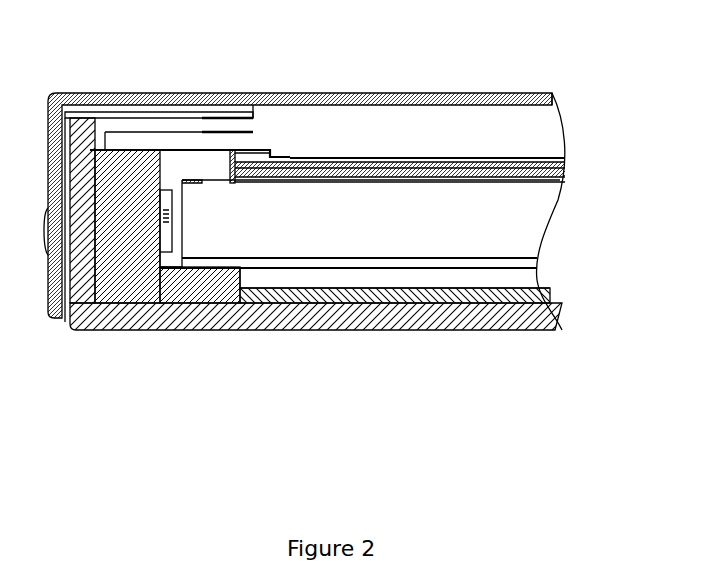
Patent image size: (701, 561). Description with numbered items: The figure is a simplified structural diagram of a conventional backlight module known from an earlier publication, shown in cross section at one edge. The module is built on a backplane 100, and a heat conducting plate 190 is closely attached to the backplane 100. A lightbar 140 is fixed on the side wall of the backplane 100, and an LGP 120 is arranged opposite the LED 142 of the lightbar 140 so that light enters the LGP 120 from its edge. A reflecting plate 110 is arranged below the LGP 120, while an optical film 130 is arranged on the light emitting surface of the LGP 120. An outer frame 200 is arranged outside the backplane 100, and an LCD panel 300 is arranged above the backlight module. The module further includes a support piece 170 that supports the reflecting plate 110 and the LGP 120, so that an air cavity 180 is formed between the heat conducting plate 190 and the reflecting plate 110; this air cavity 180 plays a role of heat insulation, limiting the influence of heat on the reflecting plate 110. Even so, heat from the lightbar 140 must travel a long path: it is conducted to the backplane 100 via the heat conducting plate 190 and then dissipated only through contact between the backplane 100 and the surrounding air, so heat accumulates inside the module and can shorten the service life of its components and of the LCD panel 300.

The backplane 100 is at (62, 318).
The reflecting plate 110 is at (537, 260).
The LGP 120 is at (545, 202).
The optical film 130 is at (563, 178).
The lightbar 140 is at (145, 333).
The LED 142 is at (168, 268).
The support piece 170 is at (222, 307).
The air cavity 180 is at (523, 282).
The heat conducting plate 190 is at (545, 298).
The outer frame 200 is at (231, 93).
The LCD panel 300 is at (552, 128).